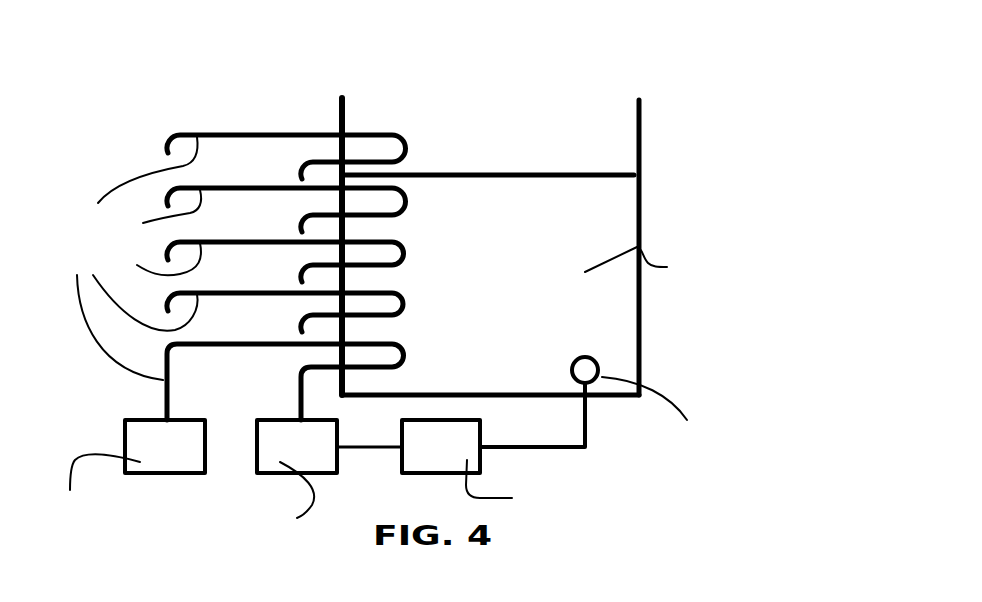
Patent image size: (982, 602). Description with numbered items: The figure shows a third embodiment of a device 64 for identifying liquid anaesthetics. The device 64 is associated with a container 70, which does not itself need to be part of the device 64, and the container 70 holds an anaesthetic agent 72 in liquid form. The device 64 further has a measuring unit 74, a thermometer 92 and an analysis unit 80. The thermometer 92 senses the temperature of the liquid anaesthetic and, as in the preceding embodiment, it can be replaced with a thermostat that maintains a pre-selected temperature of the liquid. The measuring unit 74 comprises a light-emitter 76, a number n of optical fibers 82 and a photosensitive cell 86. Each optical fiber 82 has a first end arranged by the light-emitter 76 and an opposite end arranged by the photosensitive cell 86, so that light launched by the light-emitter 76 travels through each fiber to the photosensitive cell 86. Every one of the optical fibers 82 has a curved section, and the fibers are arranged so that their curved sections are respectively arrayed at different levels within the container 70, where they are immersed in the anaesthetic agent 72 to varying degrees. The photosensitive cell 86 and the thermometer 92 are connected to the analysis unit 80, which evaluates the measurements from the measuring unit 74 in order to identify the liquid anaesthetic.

The device 64 is at (458, 48).
The container 70 is at (640, 112).
The anaesthetic agent 72 is at (612, 202).
The measuring unit 74 is at (248, 87).
The optical fibers 82 is at (407, 149).
The light-emitter 76 is at (112, 485).
The photosensitive cell 86 is at (257, 501).
The analysis unit 80 is at (518, 466).
The thermometer 92 is at (600, 367).